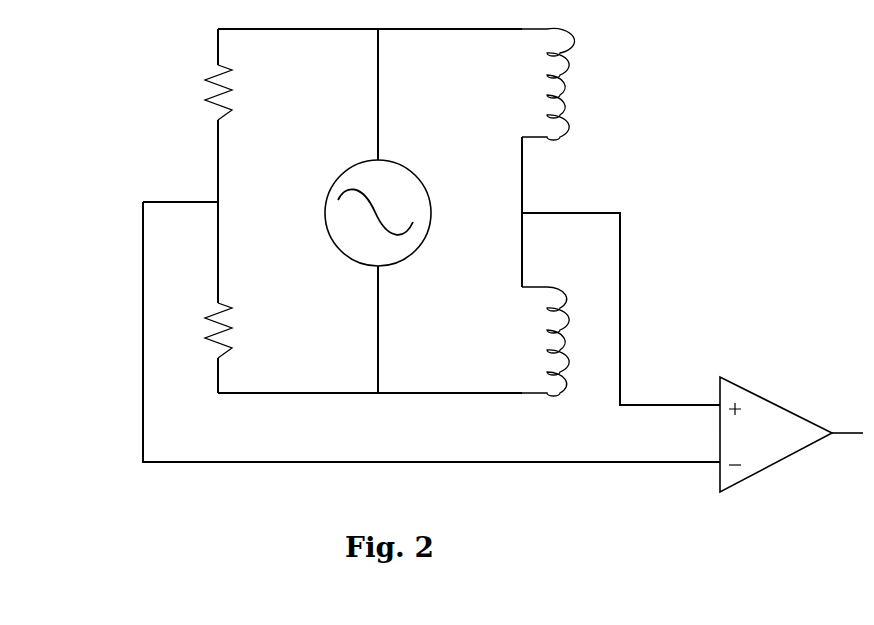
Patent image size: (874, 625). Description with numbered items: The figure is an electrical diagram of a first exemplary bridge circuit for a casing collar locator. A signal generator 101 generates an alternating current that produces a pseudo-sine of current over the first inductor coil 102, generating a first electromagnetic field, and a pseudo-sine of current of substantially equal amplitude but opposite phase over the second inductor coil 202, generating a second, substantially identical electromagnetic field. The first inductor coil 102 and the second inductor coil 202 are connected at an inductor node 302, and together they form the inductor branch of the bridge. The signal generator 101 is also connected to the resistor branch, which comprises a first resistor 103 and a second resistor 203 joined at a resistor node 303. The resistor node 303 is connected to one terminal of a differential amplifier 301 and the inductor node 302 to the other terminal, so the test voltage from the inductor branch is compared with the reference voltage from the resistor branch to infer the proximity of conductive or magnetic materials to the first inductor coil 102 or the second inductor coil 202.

The signal generator 101 is at (378, 213).
The first inductor coil 102 is at (535, 84).
The first resistor 103 is at (243, 88).
The second inductor coil 202 is at (529, 341).
The second resistor 203 is at (239, 323).
The differential amplifier 301 is at (791, 420).
The inductor node 302 is at (550, 215).
The resistor node 303 is at (206, 205).